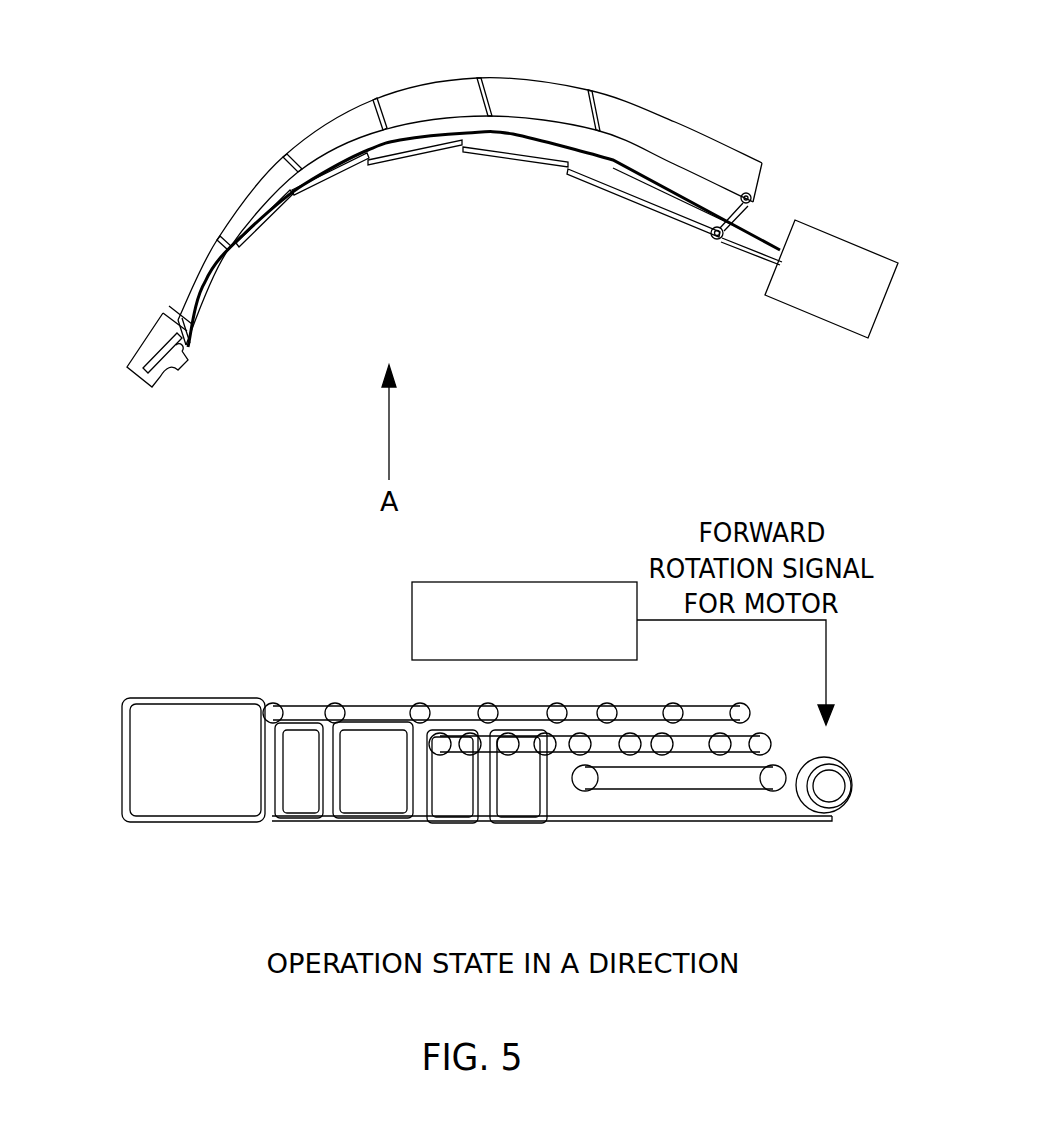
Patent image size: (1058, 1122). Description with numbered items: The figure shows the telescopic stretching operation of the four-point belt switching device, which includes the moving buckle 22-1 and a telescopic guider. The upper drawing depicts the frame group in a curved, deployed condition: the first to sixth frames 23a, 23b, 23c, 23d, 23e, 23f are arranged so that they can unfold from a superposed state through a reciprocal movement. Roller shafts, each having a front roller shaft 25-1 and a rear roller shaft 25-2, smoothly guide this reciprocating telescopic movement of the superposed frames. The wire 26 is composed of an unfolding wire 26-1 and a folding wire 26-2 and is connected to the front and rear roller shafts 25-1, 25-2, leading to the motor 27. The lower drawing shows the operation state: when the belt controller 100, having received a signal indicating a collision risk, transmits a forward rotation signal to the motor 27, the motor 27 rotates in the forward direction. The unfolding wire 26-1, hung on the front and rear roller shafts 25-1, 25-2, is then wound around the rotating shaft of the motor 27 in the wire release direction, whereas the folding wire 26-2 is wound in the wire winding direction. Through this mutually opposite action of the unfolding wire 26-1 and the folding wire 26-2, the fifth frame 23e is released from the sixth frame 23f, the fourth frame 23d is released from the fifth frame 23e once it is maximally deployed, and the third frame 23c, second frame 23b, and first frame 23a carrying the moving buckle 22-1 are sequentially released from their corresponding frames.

The moving buckle 22-1 is at (145, 340).
The first frame 23a is at (197, 282).
The second frame 23b is at (248, 206).
The third frame 23c is at (333, 136).
The fourth frame 23d is at (425, 98).
The fifth frame 23e is at (518, 97).
The sixth frame 23f is at (643, 112).
The front roller shaft 25-1 is at (710, 255).
The rear roller shaft 25-2 is at (597, 185).
The unfolding wire 26-1 is at (757, 233).
The folding wire 26-2 is at (757, 255).
The wire 26 is at (677, 780).
The motor 27 is at (838, 233).
The belt controller 100 is at (523, 582).